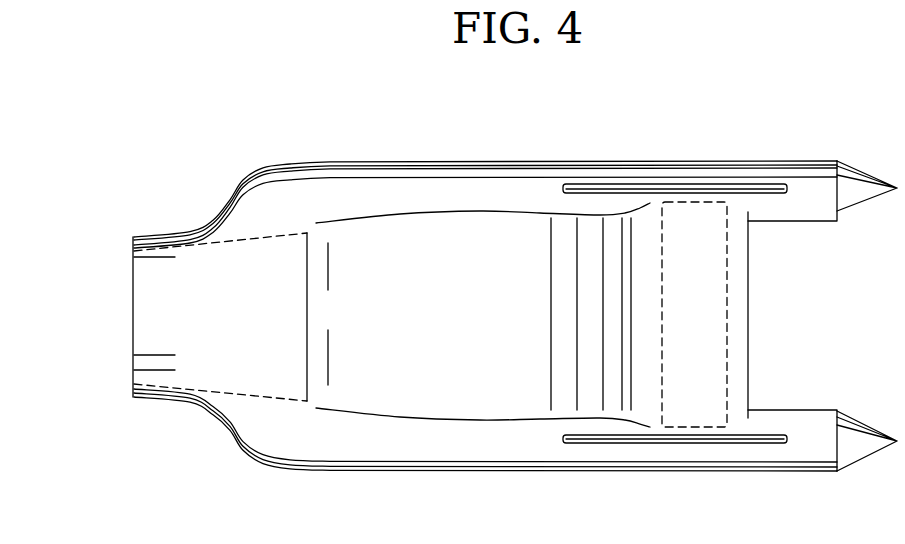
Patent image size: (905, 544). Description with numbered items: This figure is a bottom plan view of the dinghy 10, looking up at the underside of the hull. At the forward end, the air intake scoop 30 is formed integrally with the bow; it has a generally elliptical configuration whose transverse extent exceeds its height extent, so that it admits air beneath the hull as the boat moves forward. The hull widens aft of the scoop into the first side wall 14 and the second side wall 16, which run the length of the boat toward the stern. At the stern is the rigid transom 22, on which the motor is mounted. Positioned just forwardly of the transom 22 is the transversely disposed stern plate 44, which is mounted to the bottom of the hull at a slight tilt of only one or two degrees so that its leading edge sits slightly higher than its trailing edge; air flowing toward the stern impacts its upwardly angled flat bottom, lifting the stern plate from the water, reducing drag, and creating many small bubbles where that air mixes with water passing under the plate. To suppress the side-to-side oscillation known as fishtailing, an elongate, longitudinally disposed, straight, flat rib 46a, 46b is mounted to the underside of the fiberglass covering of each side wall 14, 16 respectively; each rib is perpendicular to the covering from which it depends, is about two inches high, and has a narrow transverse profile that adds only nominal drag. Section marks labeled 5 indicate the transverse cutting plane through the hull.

The dinghy 10 is at (481, 295).
The first side wall 14 is at (658, 172).
The second side wall 16 is at (740, 455).
The rigid transom 22 is at (748, 312).
The air intake scoop 30 is at (140, 298).
The stern plate 44 is at (727, 262).
The rib 46a is at (613, 188).
The rib 46b is at (660, 443).
The section line 5- 5 is at (328, 357).